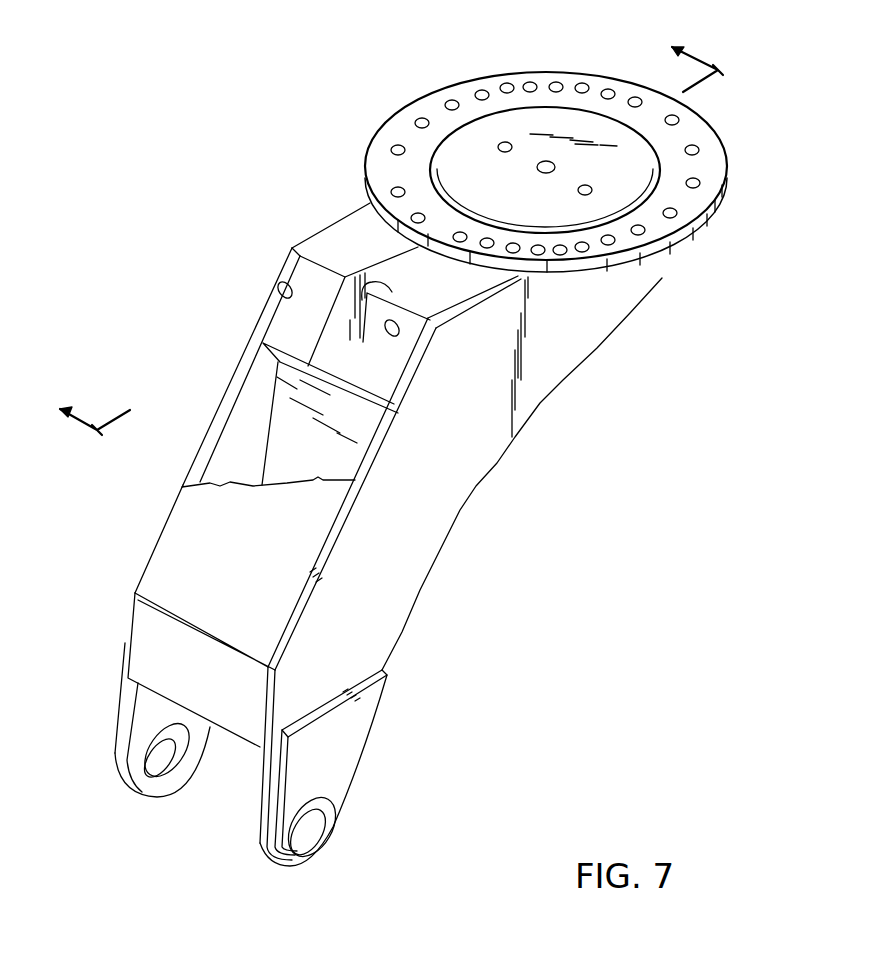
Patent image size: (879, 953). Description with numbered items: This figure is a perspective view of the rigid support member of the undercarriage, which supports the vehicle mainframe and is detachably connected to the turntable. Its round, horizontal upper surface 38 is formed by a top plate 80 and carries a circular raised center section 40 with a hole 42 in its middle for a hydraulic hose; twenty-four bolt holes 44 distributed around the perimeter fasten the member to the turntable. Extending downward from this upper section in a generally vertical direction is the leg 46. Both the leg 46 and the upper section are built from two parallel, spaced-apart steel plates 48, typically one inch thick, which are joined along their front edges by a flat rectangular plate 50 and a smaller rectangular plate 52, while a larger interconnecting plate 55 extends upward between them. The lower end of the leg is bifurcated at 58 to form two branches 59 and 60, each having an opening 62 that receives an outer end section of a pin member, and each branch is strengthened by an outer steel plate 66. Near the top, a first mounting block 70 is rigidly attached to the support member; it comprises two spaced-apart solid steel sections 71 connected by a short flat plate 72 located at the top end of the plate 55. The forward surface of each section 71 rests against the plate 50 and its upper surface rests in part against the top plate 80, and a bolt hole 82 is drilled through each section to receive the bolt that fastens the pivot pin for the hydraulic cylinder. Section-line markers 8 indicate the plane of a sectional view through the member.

The section line 8- 8 is at (391, 228).
The upper surface 38 is at (623, 93).
The circular raised center section 40 is at (615, 175).
The hole 42 is at (556, 167).
The bolt holes 44 is at (505, 83).
The leg 46 is at (420, 590).
The steel plates 48 is at (243, 360).
The flat rectangular plate 50 is at (270, 561).
The smaller rectangular plate 52 is at (153, 620).
The interconnecting plate 55 is at (300, 445).
The bifurcation 58 is at (257, 763).
The branch 59 is at (113, 733).
The branch 60 is at (333, 788).
The opening 62 is at (182, 760).
The outer steel plate 66 is at (123, 652).
The first mounting block 70 is at (337, 243).
The sections 71 is at (327, 353).
The short flat plate 72 is at (327, 358).
The top plate 80 is at (700, 230).
The bolt hole 82 is at (295, 283).